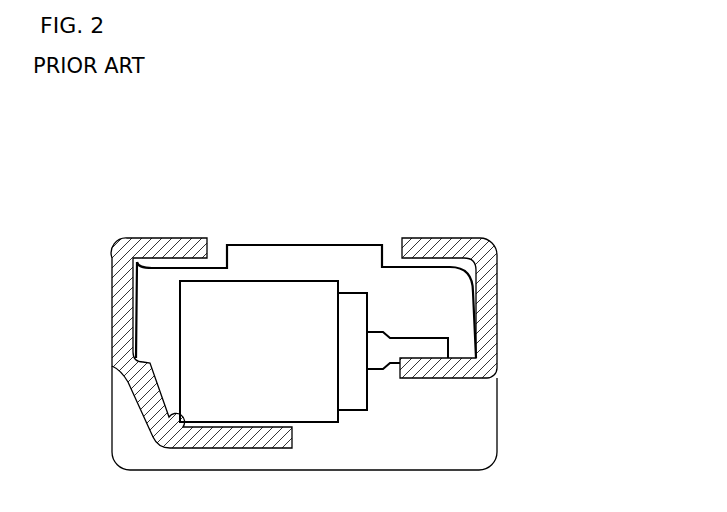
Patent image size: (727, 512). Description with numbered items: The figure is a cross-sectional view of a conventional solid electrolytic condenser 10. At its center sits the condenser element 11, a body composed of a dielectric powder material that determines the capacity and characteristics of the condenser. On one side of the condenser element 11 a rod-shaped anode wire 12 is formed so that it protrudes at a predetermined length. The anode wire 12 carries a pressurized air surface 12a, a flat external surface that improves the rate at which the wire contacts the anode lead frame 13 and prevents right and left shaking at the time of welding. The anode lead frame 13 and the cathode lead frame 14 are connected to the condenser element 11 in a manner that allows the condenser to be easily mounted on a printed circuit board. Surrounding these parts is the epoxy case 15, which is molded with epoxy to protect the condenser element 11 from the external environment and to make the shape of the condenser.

The solid electrolytic condenser 10 is at (515, 200).
The condenser element 11 is at (255, 297).
The anode wire 12 is at (451, 289).
The pressurized air surface 12a is at (407, 337).
The anode lead frame 13 is at (490, 340).
The cathode lead frame 14 is at (117, 342).
The epoxy case 15 is at (361, 263).